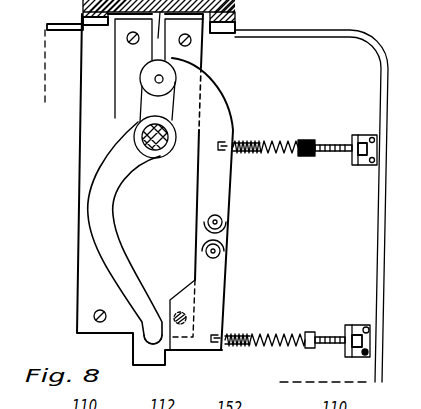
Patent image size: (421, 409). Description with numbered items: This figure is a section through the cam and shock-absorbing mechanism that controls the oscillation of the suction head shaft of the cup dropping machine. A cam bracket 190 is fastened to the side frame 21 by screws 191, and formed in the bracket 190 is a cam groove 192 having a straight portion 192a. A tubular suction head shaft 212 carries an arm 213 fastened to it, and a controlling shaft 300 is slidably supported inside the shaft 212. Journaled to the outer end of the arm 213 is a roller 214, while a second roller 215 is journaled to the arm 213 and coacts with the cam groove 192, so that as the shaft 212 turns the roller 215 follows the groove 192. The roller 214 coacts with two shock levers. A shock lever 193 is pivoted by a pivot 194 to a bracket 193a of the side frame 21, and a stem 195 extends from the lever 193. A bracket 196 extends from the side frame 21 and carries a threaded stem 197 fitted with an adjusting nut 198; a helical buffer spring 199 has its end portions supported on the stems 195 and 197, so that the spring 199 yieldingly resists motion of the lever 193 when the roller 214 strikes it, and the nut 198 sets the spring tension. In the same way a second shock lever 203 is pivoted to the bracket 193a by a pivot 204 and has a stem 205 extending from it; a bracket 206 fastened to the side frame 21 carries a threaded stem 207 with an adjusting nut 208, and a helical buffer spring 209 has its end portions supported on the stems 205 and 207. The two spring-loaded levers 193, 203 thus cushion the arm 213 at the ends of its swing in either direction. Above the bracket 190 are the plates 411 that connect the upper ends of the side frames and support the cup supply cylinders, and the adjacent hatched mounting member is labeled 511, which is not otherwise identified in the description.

The side frame 21 is at (337, 37).
The plates 411 is at (83, 14).
The mounting bar 511 is at (234, 11).
The cam bracket 190 is at (78, 268).
The screws 191 is at (128, 40).
The cam groove 192 is at (88, 200).
The straight portion of cam groove 192a is at (152, 337).
The shock lever 193 is at (220, 112).
The bracket of side frame 193a is at (205, 237).
The pivot 194 is at (222, 219).
The stem 195 is at (225, 152).
The bracket 196 is at (363, 164).
The threaded stem 197 is at (332, 140).
The adjusting nut 198 is at (318, 157).
The helical buffer spring 199 is at (277, 145).
The second shock lever 203 is at (214, 292).
The pivot 204 is at (220, 251).
The stem 205 is at (212, 345).
The bracket 206 is at (352, 325).
The threaded stem 207 is at (330, 346).
The adjusting nut 208 is at (310, 332).
The helical buffer spring 209 is at (270, 346).
The tubular suction head shaft 212 is at (159, 158).
The arm 213 is at (142, 98).
The roller 214 is at (140, 80).
The second roller 215 is at (155, 69).
The controlling shaft 300 is at (137, 124).